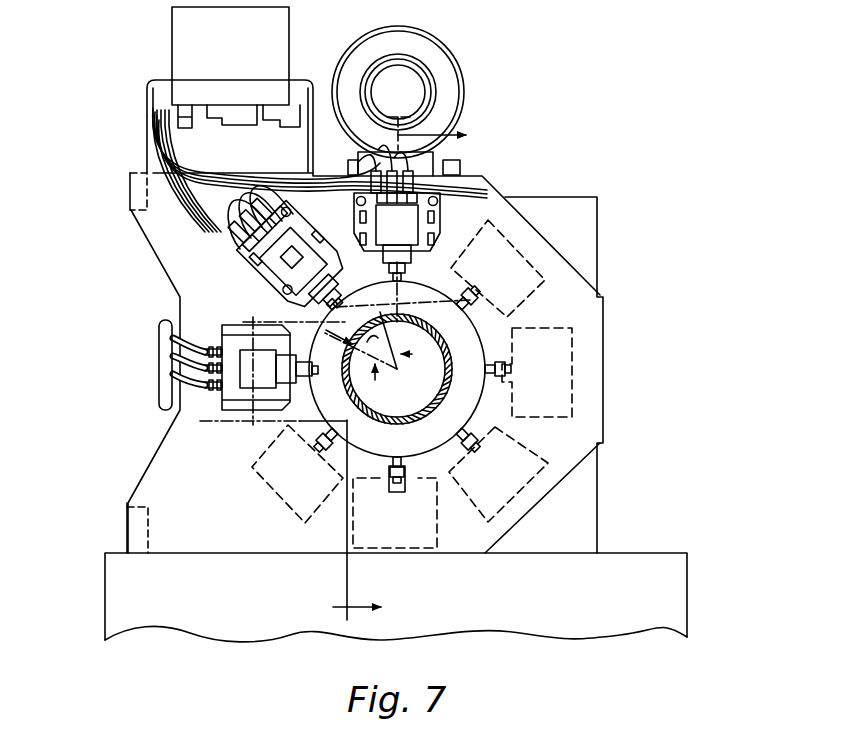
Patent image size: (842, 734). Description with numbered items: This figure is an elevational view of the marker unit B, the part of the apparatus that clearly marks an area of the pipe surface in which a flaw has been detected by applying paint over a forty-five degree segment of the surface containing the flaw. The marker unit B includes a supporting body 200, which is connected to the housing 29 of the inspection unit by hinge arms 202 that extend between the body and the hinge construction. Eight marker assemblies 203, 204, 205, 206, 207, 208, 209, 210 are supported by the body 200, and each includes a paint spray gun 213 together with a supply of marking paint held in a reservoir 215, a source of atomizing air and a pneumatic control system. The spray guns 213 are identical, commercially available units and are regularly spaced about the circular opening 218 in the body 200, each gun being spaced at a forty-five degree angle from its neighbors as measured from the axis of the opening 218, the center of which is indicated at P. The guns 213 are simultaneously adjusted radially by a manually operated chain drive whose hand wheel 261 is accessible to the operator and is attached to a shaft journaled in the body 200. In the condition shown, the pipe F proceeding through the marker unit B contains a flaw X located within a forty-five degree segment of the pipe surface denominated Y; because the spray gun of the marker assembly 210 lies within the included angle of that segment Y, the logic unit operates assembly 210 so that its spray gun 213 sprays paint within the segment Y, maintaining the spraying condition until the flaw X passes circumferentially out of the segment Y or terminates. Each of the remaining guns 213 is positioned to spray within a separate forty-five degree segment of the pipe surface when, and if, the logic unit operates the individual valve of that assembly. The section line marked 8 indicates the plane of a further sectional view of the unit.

The section line 8- 8 is at (410, 372).
The housing 29 is at (555, 197).
The supporting body 200 is at (580, 275).
The hinge arms 202 is at (128, 214).
The marker assembly 203 is at (244, 412).
The marker assembly 204 is at (270, 492).
The marker assembly 205 is at (404, 553).
The marker assembly 206 is at (552, 461).
The marker assembly 207 is at (575, 361).
The marker assembly 208 is at (552, 267).
The marker assembly 209 is at (456, 220).
The marker assembly 210 is at (268, 297).
The paint spray gun 213 is at (322, 296).
The reservoir 215 is at (240, 62).
The circular opening 218 is at (426, 451).
The hand wheel 261 is at (160, 340).
The marker unit B is at (145, 372).
The pipe F is at (375, 428).
The point P is at (397, 369).
The flaw X is at (361, 346).
The segment Y is at (402, 336).